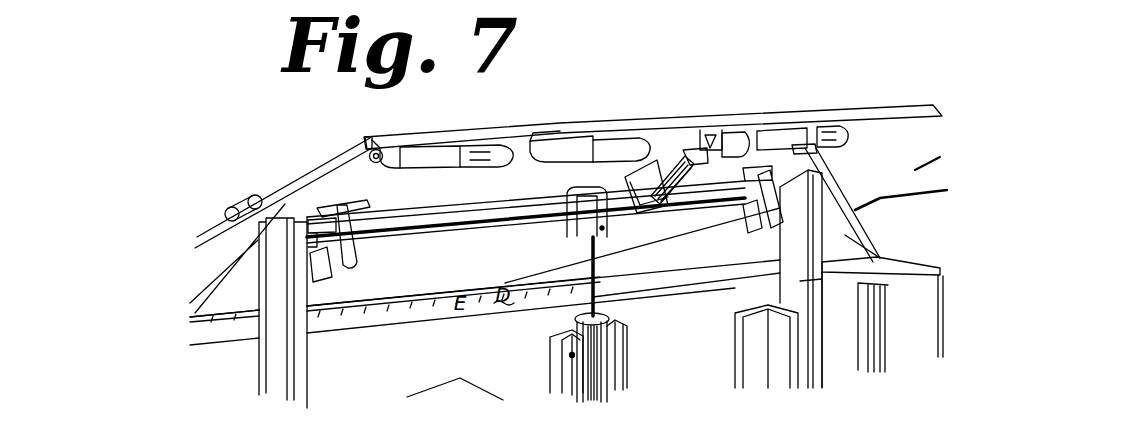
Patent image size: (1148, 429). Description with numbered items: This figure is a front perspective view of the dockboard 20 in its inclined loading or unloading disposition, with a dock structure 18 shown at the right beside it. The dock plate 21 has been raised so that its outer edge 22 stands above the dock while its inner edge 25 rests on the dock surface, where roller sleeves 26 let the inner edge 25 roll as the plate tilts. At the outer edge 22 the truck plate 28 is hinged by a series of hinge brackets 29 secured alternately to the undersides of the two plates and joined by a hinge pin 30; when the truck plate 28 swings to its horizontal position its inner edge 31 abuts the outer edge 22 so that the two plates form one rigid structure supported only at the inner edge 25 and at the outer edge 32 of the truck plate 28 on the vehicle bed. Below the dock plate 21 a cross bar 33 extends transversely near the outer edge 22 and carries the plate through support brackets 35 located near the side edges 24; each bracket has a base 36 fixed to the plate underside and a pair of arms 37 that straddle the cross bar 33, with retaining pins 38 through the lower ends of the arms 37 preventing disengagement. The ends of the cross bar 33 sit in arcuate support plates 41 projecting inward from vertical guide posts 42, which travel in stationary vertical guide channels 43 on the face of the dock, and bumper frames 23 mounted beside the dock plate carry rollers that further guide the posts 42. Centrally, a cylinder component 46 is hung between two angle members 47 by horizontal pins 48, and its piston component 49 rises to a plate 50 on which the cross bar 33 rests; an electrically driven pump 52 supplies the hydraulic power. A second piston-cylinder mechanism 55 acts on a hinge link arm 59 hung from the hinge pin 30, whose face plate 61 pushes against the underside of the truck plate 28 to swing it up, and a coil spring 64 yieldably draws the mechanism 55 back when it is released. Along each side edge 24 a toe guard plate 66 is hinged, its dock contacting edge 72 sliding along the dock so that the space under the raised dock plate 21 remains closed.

The cabinet 18 is at (925, 302).
The dockboard 20 is at (943, 155).
The dock plate 21 is at (408, 202).
The outer edge 22 is at (372, 142).
The bumper frames 23 is at (917, 262).
The side edges 24 is at (298, 180).
The inner edge 25 is at (413, 289).
The roller sleeves 26 is at (392, 304).
The truck plate 28 is at (755, 122).
The hinge brackets 29 is at (432, 150).
The hinge pin 30 is at (378, 150).
The inner edge 31 is at (365, 139).
The outer edge 32 is at (533, 133).
The cross bar 33 is at (445, 234).
The support brackets 35 is at (340, 207).
The base 36 is at (363, 210).
The arms 37 is at (357, 256).
The retaining pins 38 is at (333, 281).
The arcuate support plates 41 is at (306, 262).
The vertical guide posts 42 is at (308, 345).
The vertical guide channels 43 is at (757, 279).
The cylinder component 46 is at (607, 352).
The angle members 47 is at (555, 383).
The horizontal pins 48 is at (567, 355).
The piston component 49 is at (594, 283).
The plate 50 is at (563, 237).
The pump 52 is at (460, 378).
The piston-cylinder mechanism 55 is at (688, 213).
The hinge link arm 59 is at (667, 153).
The face plate 61 is at (717, 130).
The coil spring 64 is at (622, 207).
The toe guard plate 66 is at (213, 245).
The dock contacting edge 72 is at (918, 193).